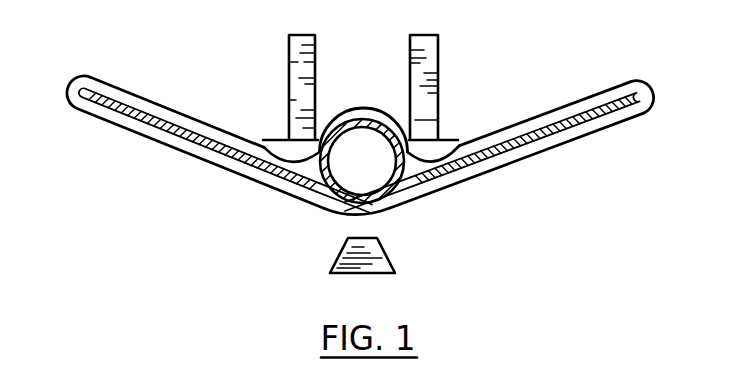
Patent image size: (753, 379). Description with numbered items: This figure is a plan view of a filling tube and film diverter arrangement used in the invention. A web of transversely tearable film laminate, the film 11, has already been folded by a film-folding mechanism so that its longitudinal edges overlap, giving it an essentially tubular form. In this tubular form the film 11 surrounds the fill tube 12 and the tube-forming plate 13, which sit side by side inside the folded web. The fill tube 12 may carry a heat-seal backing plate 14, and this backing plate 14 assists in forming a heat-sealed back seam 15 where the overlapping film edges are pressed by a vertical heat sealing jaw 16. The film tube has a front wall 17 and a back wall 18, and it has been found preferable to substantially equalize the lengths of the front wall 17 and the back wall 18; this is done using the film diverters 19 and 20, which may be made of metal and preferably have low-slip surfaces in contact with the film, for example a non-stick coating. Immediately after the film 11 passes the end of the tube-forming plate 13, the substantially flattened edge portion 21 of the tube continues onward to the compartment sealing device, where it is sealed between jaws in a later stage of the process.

The film 11 is at (175, 150).
The fill tube 12 is at (401, 179).
The tube-forming plate 13 is at (522, 142).
The heat-seal backing plate 14 is at (372, 206).
The heat-sealed back seam 15 is at (352, 222).
The vertical heat sealing jaw 16 is at (381, 274).
The front wall 17 is at (260, 182).
The back wall 18 is at (176, 112).
The film diverter 19 is at (283, 143).
The film diverter 20 is at (456, 140).
The substantially flattened edge portion 21 is at (643, 115).